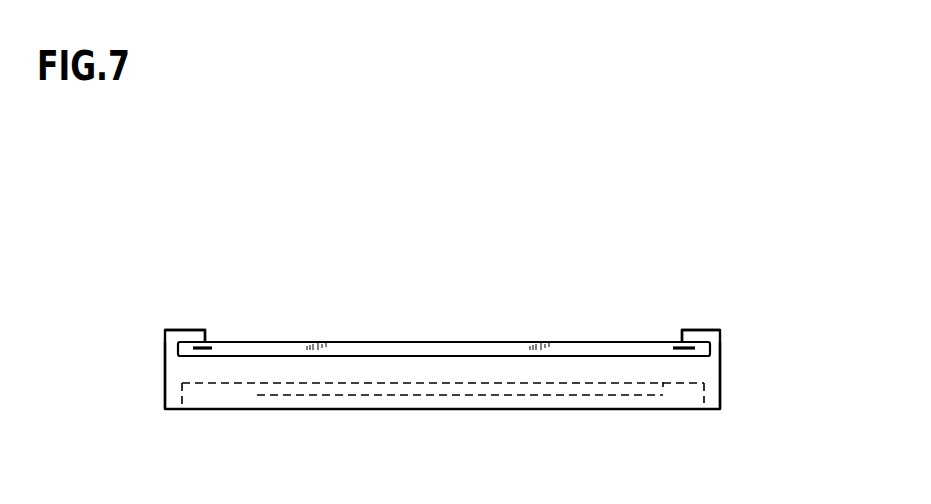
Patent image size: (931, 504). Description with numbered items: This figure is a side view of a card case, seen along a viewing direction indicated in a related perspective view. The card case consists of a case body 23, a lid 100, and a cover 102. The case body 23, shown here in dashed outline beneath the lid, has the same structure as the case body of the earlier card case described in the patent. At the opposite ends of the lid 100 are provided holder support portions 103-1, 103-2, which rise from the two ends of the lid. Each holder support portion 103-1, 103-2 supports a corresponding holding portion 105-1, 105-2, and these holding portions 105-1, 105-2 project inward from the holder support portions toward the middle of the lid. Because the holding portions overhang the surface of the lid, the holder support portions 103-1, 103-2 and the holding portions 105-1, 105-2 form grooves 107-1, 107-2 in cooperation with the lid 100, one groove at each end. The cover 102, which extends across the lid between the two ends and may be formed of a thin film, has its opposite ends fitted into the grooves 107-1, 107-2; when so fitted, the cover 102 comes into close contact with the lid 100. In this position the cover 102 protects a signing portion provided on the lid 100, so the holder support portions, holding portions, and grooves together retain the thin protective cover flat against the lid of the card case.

The lid 100 is at (573, 370).
The cover 102 is at (445, 342).
The case body 23 is at (423, 408).
The holding portion 105-2 is at (190, 330).
The holding portion 105-1 is at (697, 330).
The groove 107-2 is at (212, 346).
The groove 107-1 is at (673, 346).
The holder support portion 103-2 is at (165, 357).
The holder support portion 103-1 is at (721, 358).